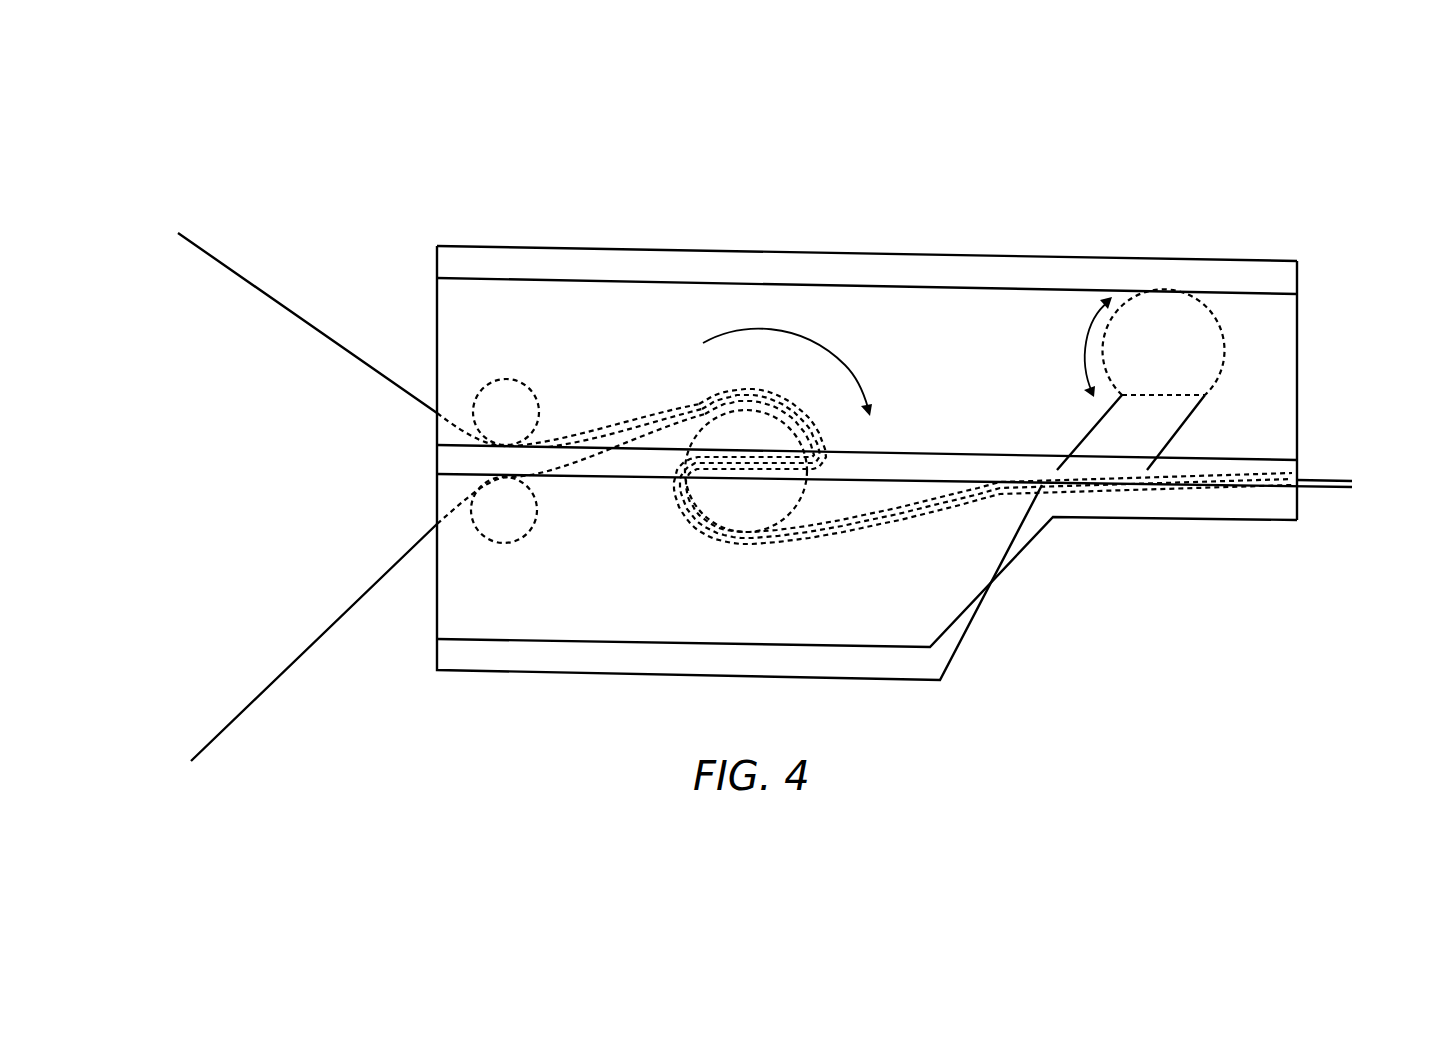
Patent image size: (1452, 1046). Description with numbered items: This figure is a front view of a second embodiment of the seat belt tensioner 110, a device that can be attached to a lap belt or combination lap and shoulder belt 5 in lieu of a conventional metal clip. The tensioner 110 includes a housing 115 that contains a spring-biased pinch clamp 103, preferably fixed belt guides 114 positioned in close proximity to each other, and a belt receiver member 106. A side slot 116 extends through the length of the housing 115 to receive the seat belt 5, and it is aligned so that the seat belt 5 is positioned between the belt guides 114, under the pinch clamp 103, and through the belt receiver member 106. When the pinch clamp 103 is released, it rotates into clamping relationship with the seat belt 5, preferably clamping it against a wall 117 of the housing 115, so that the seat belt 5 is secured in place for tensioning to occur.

The seat belt 5 is at (329, 340).
The pinch clamp 103 is at (1224, 365).
The belt receiver member 106 is at (800, 503).
The seat belt tensioner 110 is at (1064, 100).
The belt guides 114 is at (505, 378).
The housing 115 is at (745, 250).
The side slot 116 is at (426, 462).
The wall 117 is at (1087, 518).